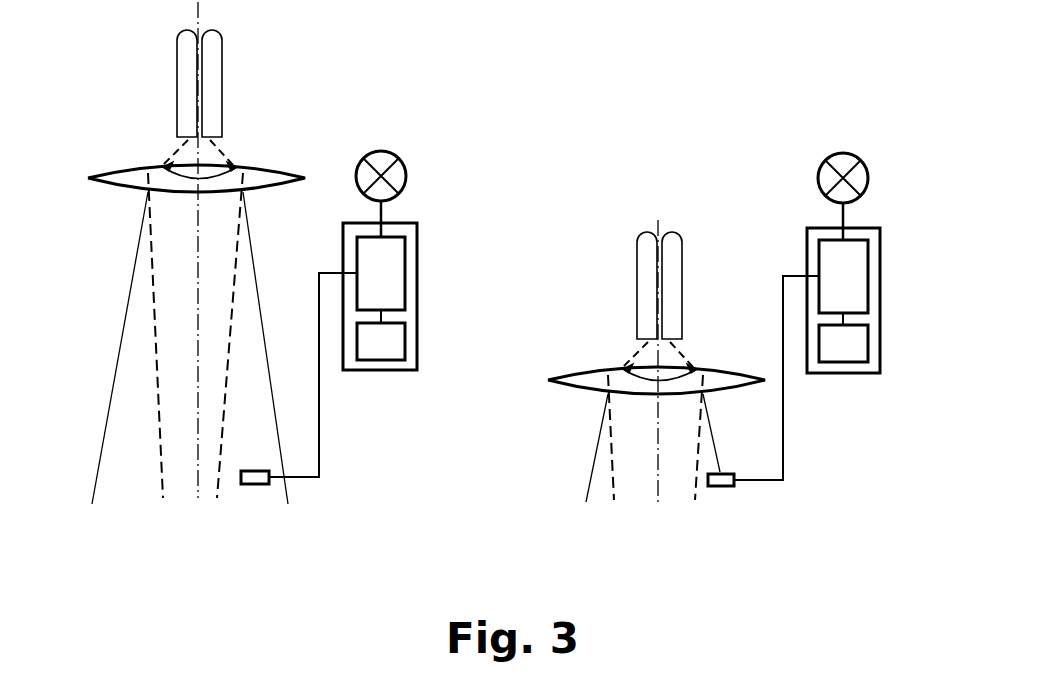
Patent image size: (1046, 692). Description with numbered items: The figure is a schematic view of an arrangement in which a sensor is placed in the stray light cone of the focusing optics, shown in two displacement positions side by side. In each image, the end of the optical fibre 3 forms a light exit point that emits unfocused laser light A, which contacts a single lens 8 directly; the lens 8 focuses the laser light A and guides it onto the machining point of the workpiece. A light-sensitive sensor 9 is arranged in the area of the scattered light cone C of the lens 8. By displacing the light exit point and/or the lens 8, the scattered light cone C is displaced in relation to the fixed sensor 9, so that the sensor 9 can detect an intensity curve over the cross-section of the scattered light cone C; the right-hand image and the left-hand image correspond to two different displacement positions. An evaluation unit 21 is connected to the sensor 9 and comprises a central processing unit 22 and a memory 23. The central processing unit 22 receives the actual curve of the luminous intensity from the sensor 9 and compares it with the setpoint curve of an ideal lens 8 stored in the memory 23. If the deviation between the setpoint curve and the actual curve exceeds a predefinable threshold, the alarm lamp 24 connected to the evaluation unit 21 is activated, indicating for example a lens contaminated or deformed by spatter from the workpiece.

The optical fibre 3 is at (213, 75).
The lens 8 is at (118, 175).
The light-sensitive sensor 9 is at (252, 488).
The evaluation unit 21 is at (400, 373).
The central processing unit 22 is at (397, 276).
The memory 23 is at (397, 340).
The alarm lamp 24 is at (403, 176).
The unfocused laser light A is at (158, 247).
The scattered light cone C is at (122, 392).